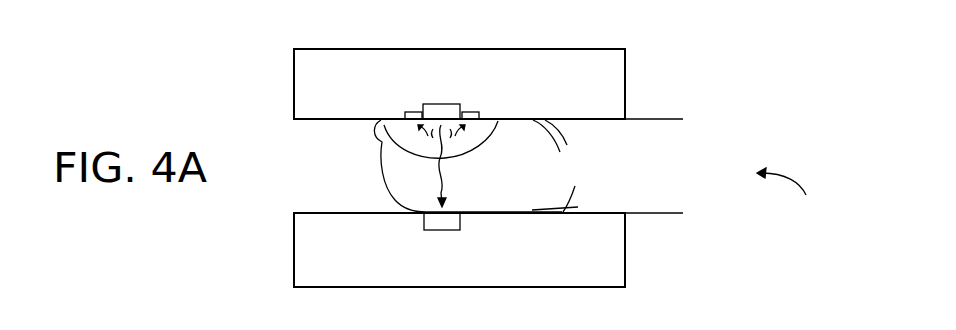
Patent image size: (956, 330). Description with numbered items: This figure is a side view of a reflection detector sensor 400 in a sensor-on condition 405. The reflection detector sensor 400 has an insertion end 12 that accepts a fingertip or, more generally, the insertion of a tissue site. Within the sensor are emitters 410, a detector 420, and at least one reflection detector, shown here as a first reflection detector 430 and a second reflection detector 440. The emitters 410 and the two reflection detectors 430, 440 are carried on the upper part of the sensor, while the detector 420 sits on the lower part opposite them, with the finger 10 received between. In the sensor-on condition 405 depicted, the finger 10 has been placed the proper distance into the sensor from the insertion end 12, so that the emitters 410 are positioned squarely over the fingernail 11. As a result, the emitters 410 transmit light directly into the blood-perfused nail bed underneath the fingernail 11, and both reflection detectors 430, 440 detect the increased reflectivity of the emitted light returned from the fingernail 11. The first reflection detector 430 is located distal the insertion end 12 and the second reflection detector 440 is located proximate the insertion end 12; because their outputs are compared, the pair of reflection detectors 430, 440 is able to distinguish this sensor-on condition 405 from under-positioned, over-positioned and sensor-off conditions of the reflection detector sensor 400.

The reflection detector sensor 400 is at (294, 68).
The insertion end 12 is at (625, 84).
The finger 10 is at (648, 127).
The emitters 410 is at (437, 104).
The first reflection detector 430 is at (413, 112).
The second reflection detector 440 is at (470, 112).
The detector 420 is at (443, 230).
The fingernail 11 is at (480, 141).
The sensor-on condition 405 is at (790, 200).